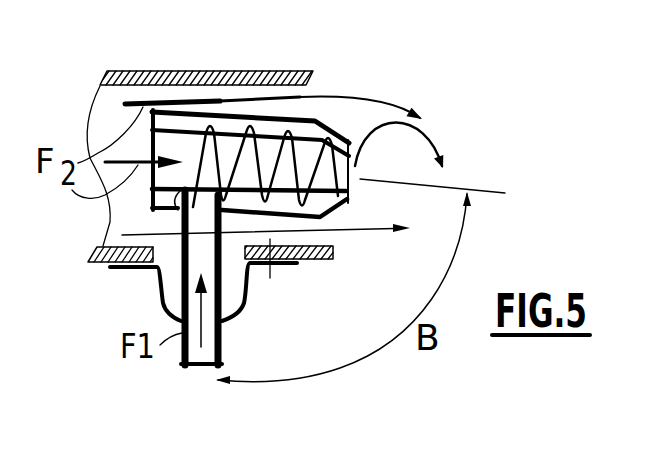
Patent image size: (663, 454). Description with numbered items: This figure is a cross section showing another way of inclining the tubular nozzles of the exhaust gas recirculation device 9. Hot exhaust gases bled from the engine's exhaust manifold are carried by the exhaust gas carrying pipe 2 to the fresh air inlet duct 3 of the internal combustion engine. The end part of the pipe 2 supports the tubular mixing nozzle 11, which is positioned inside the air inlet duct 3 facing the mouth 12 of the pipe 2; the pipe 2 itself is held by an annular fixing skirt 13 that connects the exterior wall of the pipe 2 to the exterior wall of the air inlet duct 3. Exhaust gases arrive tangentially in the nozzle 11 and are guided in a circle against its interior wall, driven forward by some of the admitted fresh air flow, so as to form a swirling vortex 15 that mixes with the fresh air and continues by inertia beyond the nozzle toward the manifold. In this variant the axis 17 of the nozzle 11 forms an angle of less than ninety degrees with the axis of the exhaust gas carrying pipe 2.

The exhaust gas carrying pipe 2 is at (185, 364).
The fresh air inlet duct 3 is at (336, 258).
The exhaust gas recirculation device 9 is at (330, 117).
The tubular mixing nozzle 11 is at (197, 116).
The mouth of the exhaust gas carrying pipe 12 is at (177, 212).
The annular fixing skirt 13 is at (242, 308).
The swirling vortex 15 is at (428, 143).
The axis of the nozzle 17 is at (398, 186).